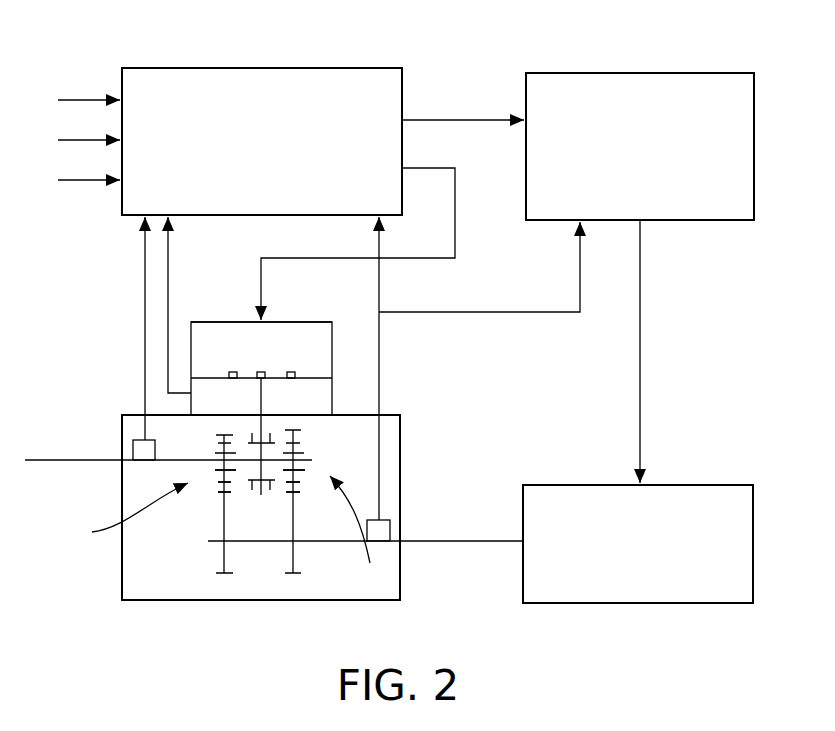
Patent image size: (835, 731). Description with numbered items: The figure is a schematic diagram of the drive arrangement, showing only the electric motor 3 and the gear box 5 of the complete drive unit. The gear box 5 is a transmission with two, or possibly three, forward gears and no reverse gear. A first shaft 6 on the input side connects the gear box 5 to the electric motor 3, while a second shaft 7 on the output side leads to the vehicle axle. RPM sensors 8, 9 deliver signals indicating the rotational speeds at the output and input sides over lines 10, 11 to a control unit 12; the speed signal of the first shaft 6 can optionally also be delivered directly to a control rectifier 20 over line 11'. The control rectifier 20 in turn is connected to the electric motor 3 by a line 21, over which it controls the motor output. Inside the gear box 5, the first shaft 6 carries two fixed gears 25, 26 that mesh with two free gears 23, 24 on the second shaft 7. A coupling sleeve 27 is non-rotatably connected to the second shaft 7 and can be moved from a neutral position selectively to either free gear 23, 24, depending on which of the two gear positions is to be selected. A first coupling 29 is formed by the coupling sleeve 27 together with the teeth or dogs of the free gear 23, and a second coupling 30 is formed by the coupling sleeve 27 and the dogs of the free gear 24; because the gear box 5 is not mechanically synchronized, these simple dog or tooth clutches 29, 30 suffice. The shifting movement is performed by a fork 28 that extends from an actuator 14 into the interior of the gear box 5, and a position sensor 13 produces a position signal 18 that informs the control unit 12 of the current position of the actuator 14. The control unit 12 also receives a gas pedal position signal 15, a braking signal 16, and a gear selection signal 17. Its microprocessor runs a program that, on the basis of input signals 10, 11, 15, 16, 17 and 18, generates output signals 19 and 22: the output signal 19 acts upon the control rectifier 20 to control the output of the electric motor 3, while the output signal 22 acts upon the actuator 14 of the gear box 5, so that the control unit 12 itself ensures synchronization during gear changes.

The electric motor 3 is at (717, 505).
The gear box 5 is at (147, 575).
The first shaft 6 is at (447, 545).
The second shaft 7 is at (101, 458).
The RPM sensor 8 is at (140, 455).
The RPM sensor 9 is at (382, 530).
The line 10 is at (145, 260).
The line 11 is at (415, 368).
The line 11' is at (551, 267).
The control unit 12 is at (276, 95).
The position sensor 13 is at (209, 390).
The actuator 14 is at (200, 330).
The gas pedal position signal 15 is at (71, 101).
The braking signal 16 is at (71, 141).
The gear selection signal 17 is at (71, 181).
The position signal 18 is at (168, 297).
The output signal 19 is at (477, 120).
The control rectifier 20 is at (717, 100).
The engine control line 21 is at (640, 440).
The output signal 22 is at (427, 167).
The free gear 23 is at (220, 485).
The free gear 24 is at (295, 472).
The fixed gear 25 is at (222, 550).
The fixed gear 26 is at (290, 552).
The coupling sleeve 27 is at (259, 493).
The fork 28 is at (261, 408).
The first coupling 29 is at (119, 515).
The second coupling 30 is at (357, 536).